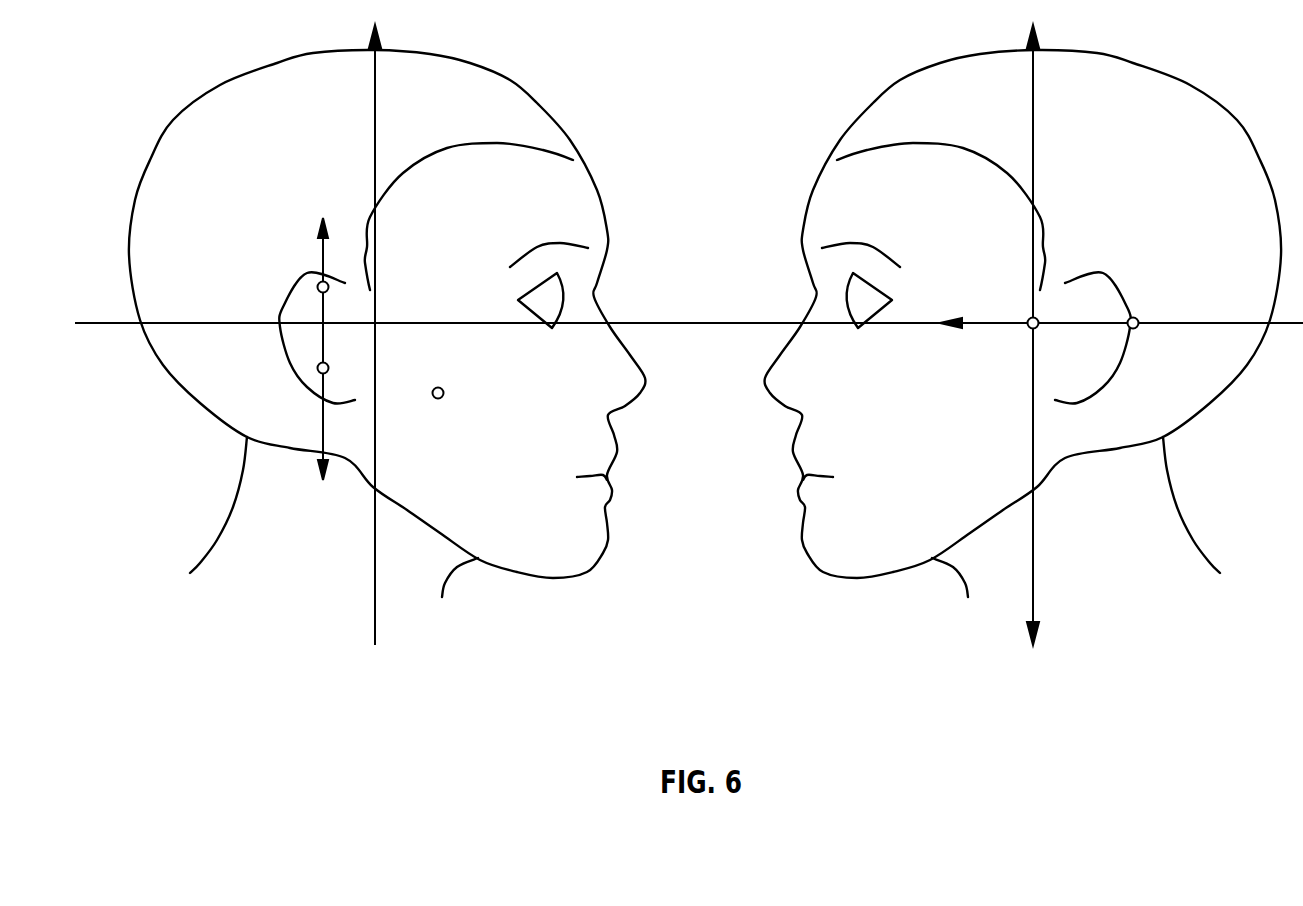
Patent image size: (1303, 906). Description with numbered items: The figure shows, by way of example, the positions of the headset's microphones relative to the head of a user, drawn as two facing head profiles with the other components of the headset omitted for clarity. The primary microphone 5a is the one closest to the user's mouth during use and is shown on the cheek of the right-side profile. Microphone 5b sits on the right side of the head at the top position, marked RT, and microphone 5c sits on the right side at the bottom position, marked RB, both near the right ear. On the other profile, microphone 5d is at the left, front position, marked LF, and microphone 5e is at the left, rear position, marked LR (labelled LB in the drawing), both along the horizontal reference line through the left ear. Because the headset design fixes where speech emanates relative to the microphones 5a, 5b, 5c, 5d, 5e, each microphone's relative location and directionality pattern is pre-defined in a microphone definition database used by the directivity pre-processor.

The primary microphone 5a is at (438, 399).
The microphone 5b is at (318, 282).
The microphone 5c is at (318, 372).
The microphone 5d is at (1028, 329).
The microphone 5e is at (1139, 317).